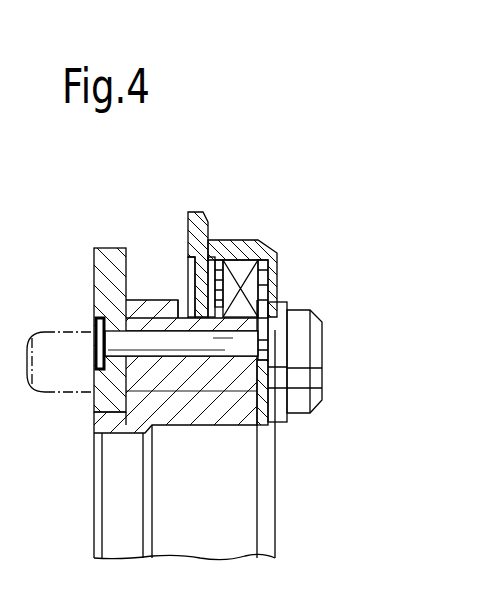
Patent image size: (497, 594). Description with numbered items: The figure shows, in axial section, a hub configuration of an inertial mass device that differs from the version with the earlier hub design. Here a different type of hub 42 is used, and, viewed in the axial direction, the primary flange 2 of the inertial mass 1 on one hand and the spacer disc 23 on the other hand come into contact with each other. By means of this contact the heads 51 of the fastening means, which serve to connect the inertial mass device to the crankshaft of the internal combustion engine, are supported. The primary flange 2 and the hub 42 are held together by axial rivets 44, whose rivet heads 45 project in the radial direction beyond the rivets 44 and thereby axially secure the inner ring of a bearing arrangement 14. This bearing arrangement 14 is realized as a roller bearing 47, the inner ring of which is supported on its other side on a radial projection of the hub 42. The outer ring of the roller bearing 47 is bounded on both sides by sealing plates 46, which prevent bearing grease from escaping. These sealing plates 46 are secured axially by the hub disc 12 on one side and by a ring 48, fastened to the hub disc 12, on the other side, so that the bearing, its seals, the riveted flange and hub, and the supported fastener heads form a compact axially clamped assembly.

The inertial mass 1 is at (93, 410).
The primary flange 2 is at (105, 272).
The hub disc 12 is at (198, 212).
The bearing arrangement 14 is at (222, 280).
The spacer disc 23 is at (275, 425).
The hub 42 is at (232, 416).
The axial rivets 44 is at (95, 317).
The rivet heads 45 is at (270, 323).
The sealing plates 46 is at (252, 262).
The roller bearing 47 is at (255, 284).
The ring 48 is at (275, 249).
The heads 51 is at (310, 386).